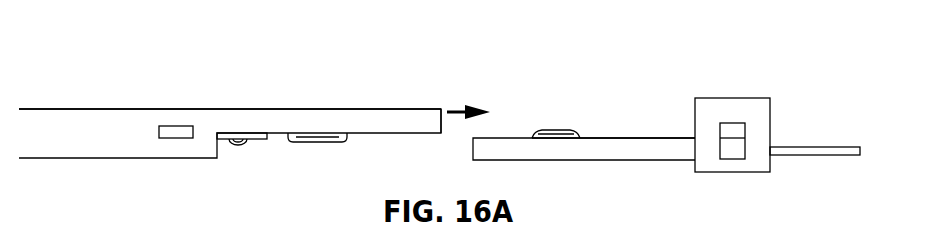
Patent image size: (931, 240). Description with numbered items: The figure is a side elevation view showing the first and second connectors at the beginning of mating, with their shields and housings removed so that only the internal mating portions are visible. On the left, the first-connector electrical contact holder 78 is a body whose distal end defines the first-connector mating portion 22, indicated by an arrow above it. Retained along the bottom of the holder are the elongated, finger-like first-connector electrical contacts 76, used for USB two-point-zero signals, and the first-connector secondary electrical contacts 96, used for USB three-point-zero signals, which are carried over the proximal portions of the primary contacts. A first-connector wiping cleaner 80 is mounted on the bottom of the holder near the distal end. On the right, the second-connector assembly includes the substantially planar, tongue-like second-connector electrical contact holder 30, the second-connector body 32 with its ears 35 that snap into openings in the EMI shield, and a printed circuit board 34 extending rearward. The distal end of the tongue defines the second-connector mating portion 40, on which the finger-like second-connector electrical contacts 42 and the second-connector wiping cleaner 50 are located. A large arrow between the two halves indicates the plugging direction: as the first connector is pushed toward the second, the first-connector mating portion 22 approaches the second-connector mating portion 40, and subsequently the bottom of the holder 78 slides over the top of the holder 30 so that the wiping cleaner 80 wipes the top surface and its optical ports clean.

The first-connector mating portion 22 is at (305, 90).
The first-connector electrical contact holder 78 is at (138, 158).
The first-connector secondary electrical contacts 96 is at (238, 146).
The first-connector electrical contacts 76 is at (320, 142).
The first-connector wiping cleaner 80 is at (426, 139).
The second-connector electrical contact holder 30 is at (665, 160).
The second-connector body 32 is at (745, 172).
The printed circuit board 34 is at (826, 147).
The ears 35 is at (735, 130).
The second-connector mating portion 40 is at (541, 99).
The second-connector electrical contacts 42 is at (572, 130).
The second-connector wiping cleaner 50 is at (626, 134).